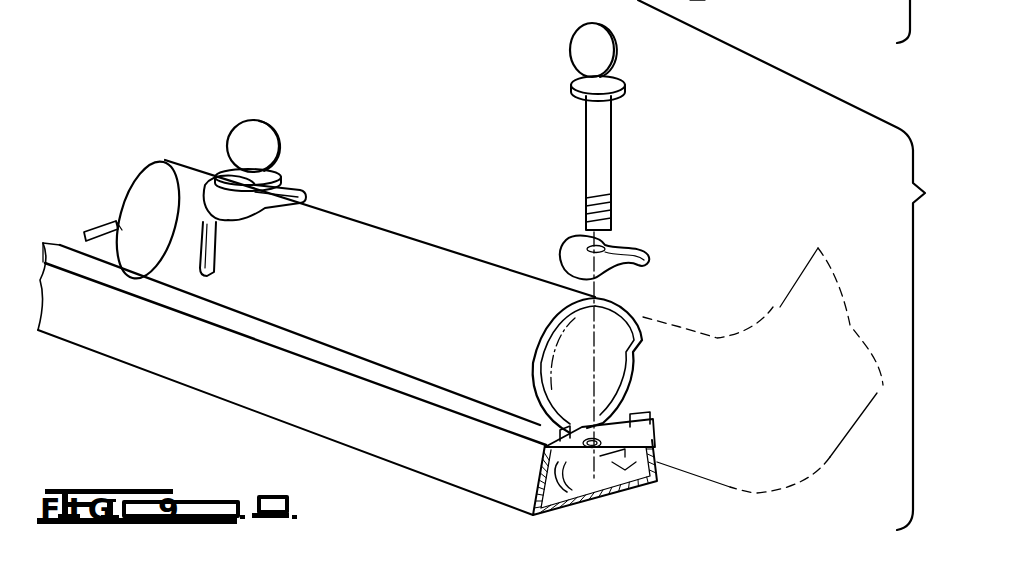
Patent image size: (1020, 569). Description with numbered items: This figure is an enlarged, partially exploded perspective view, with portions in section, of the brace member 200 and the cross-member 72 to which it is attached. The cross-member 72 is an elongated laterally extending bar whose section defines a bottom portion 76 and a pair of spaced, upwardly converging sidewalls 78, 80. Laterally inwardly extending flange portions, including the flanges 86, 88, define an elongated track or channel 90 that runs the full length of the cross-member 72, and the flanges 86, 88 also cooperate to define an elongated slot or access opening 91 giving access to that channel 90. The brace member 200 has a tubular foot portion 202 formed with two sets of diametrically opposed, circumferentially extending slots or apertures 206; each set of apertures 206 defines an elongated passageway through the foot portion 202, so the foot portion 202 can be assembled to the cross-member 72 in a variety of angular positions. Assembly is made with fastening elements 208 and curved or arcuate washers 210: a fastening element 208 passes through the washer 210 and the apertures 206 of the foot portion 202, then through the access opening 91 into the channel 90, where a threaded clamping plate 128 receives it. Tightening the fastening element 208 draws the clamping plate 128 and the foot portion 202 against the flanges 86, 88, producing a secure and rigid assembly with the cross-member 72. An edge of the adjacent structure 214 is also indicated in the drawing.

The cross-member 72 is at (43, 245).
The bottom portion 76 is at (620, 493).
The sidewall 78 is at (230, 380).
The sidewall 80 is at (660, 458).
The flange portion 86 is at (130, 283).
The flange portion 88 is at (100, 220).
The channel 90 is at (575, 458).
The access opening 91 is at (620, 478).
The clamping plate 128 is at (652, 436).
The brace member 200 is at (760, 296).
The foot portion 202 is at (392, 277).
The aperture 206 is at (200, 240).
The fastening element 208 is at (597, 122).
The arcuate washer 210 is at (207, 188).
The panel edge 214 is at (714, 6).